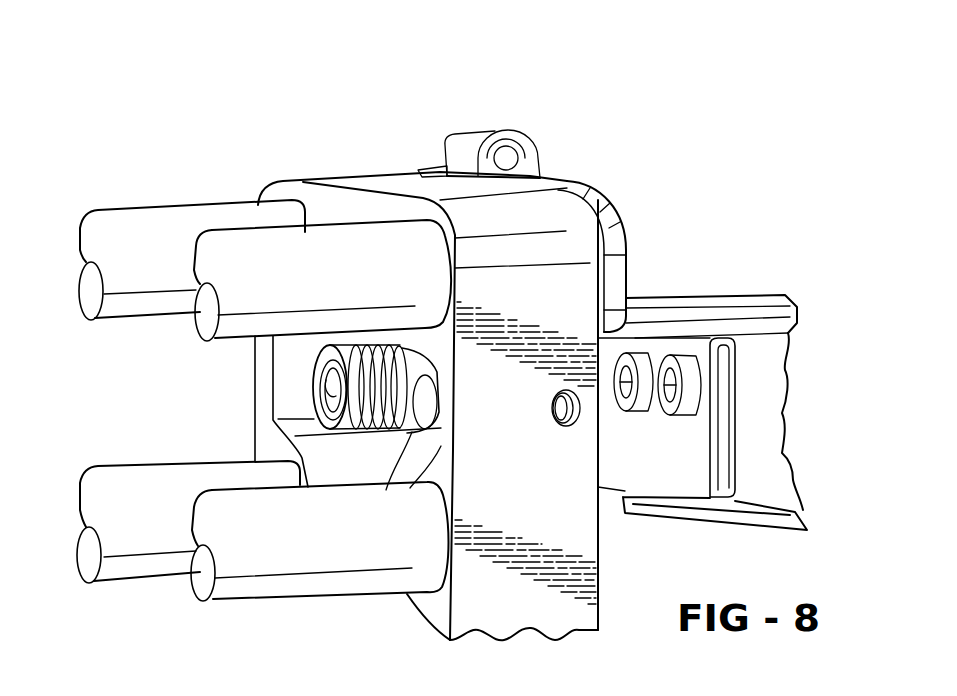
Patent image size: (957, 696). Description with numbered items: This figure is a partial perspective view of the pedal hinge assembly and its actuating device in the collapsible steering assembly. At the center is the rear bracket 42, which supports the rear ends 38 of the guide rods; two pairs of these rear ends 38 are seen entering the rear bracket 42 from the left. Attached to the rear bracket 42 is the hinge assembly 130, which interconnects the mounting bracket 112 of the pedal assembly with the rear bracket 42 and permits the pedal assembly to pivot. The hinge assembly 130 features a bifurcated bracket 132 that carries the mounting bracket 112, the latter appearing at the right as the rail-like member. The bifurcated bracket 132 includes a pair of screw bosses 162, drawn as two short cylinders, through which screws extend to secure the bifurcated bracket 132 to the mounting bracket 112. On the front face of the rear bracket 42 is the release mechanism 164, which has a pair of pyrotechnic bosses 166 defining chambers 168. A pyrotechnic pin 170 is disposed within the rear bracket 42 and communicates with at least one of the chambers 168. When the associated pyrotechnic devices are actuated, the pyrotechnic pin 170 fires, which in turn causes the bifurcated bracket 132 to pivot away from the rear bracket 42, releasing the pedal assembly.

The rear ends 38 is at (225, 243).
The rear bracket 42 is at (368, 176).
The mounting bracket 112 is at (753, 300).
The hinge assembly 130 is at (488, 130).
The bifurcated bracket 132 is at (592, 180).
The screw bosses 162 is at (640, 353).
The release mechanism 164 is at (306, 348).
The pyrotechnic bosses 166 is at (425, 415).
The chambers 168 is at (413, 435).
The pyrotechnic pin 170 is at (558, 392).